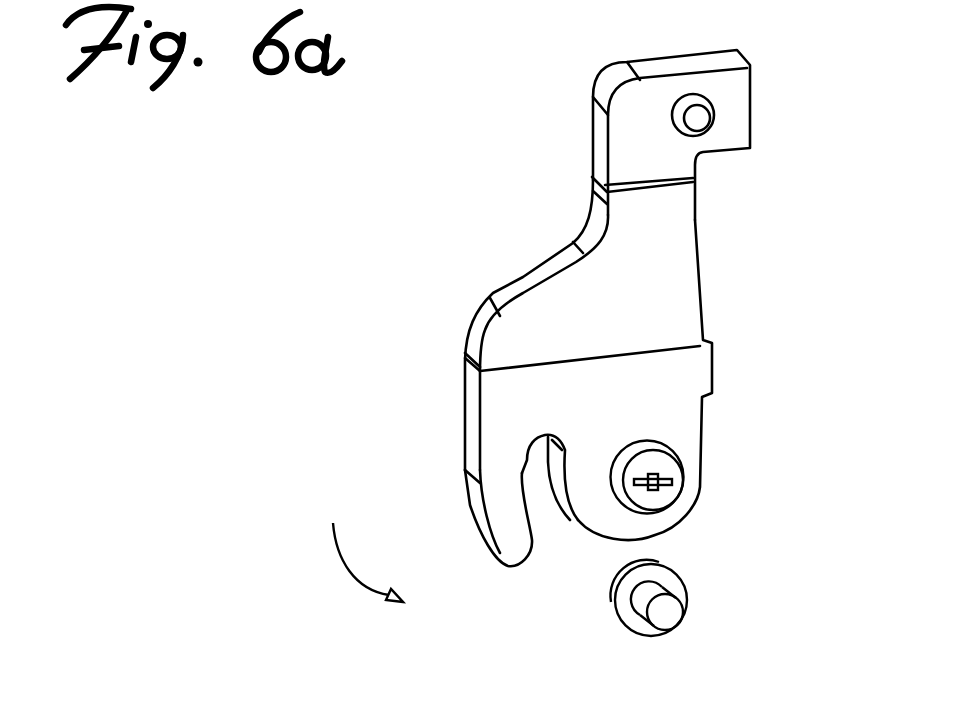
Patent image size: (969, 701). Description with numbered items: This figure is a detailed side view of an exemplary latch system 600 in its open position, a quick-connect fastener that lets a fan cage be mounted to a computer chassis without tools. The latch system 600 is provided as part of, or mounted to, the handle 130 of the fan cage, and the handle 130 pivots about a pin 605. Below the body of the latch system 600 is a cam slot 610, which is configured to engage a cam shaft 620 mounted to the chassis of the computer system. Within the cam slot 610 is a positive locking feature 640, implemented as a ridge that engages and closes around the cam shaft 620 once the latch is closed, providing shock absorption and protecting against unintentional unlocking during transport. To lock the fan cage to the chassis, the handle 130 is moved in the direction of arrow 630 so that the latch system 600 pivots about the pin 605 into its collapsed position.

The handle 130 is at (722, 49).
The latch system 600 is at (573, 608).
The pin 605 is at (683, 493).
The cam slot 610 is at (545, 543).
The cam shaft 620 is at (675, 624).
The arrow 630 is at (353, 580).
The positive locking feature 640 is at (527, 450).